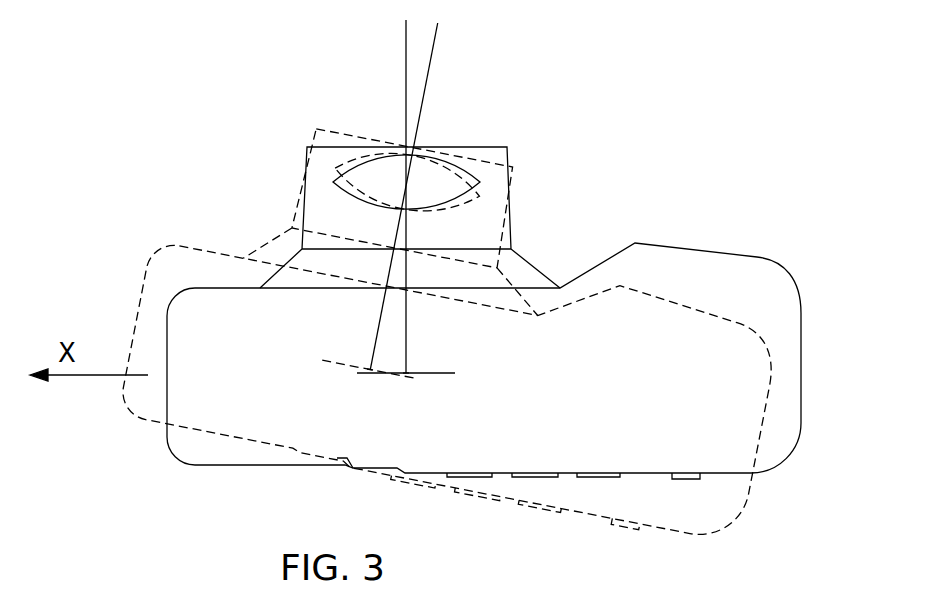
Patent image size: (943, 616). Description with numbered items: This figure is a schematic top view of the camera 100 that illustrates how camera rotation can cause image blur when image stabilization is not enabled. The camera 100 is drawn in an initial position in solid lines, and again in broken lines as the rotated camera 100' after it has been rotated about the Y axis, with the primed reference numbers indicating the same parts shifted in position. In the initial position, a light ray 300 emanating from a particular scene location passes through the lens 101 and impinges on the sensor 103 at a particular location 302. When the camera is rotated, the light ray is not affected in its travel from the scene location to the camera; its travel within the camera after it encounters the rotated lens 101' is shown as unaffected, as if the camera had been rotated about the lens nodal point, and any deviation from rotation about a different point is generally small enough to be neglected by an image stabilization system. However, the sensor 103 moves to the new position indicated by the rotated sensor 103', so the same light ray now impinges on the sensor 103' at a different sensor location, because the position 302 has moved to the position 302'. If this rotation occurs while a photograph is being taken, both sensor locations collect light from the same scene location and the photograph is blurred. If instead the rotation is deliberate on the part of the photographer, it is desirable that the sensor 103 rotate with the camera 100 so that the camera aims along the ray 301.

The camera 100 is at (493, 350).
The camera in rotated position 100' is at (459, 329).
The lens 101 is at (335, 192).
The lens in rotated position 101' is at (342, 166).
The sensor 103 is at (447, 390).
The sensor in rotated position 103' is at (332, 379).
The light ray 300 is at (405, 100).
The ray 301 is at (432, 72).
The sensor location 302 is at (470, 349).
The sensor location in rotated position 302' is at (328, 337).